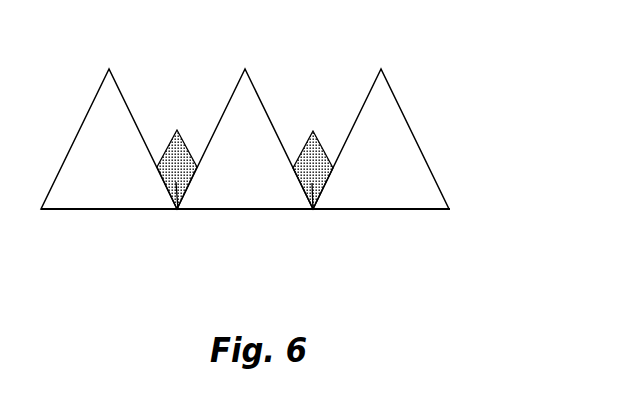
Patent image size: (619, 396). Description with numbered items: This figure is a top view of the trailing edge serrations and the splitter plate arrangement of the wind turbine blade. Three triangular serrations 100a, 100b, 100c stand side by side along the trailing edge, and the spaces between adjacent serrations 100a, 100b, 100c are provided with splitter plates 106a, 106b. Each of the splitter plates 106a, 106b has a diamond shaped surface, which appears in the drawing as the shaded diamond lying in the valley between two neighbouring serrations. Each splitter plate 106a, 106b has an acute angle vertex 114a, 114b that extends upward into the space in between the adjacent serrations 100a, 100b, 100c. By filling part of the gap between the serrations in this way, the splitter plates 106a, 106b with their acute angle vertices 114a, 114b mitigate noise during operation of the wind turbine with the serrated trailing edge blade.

The serration 100a is at (130, 195).
The serration 100b is at (268, 195).
The serration 100c is at (406, 195).
The acute angle vertex 114a is at (177, 130).
The acute angle vertex 114b is at (313, 131).
The splitter plate 106a is at (178, 210).
The splitter plate 106b is at (313, 210).